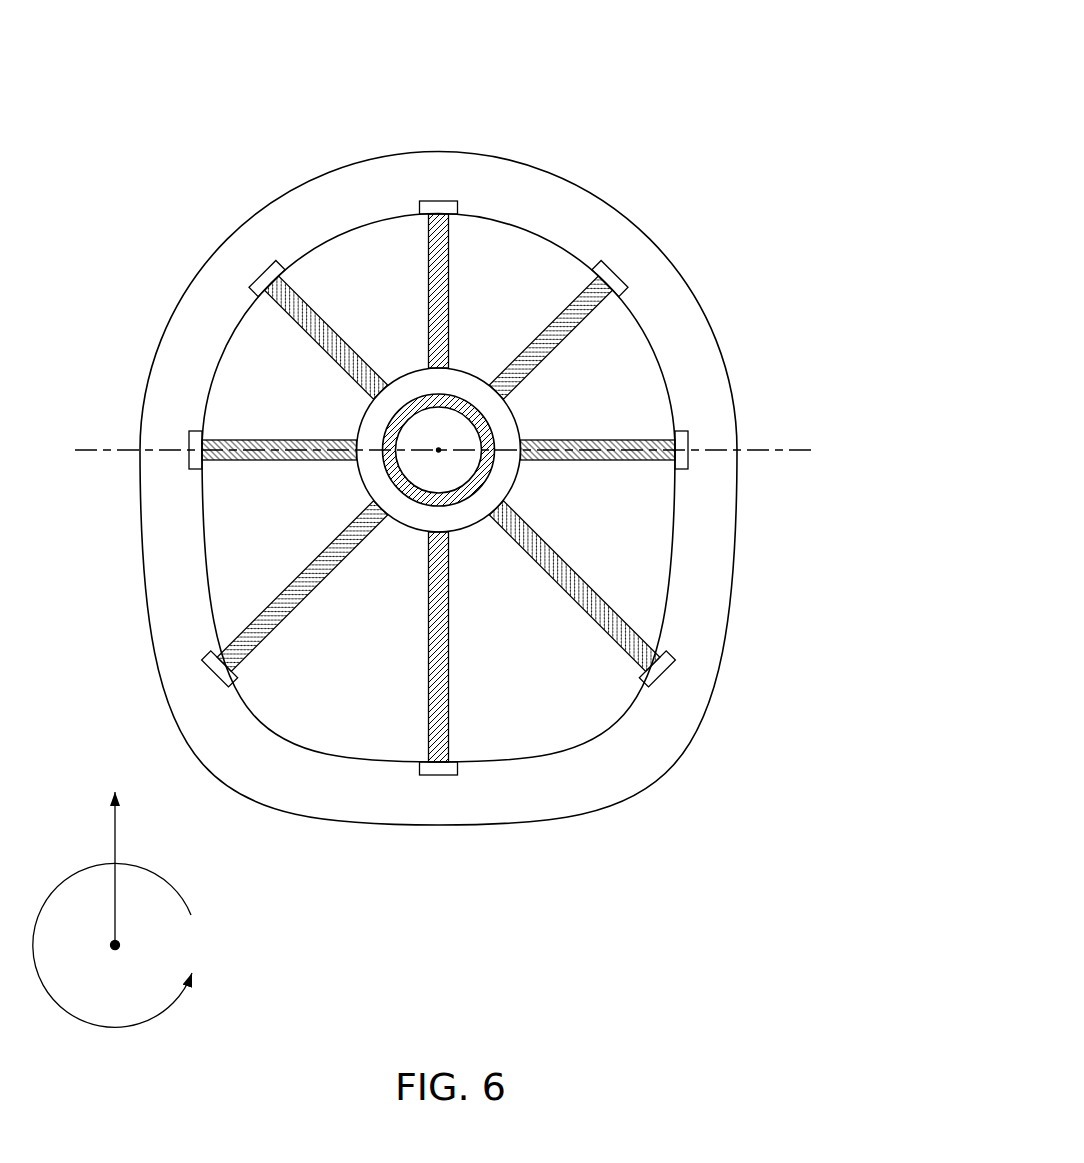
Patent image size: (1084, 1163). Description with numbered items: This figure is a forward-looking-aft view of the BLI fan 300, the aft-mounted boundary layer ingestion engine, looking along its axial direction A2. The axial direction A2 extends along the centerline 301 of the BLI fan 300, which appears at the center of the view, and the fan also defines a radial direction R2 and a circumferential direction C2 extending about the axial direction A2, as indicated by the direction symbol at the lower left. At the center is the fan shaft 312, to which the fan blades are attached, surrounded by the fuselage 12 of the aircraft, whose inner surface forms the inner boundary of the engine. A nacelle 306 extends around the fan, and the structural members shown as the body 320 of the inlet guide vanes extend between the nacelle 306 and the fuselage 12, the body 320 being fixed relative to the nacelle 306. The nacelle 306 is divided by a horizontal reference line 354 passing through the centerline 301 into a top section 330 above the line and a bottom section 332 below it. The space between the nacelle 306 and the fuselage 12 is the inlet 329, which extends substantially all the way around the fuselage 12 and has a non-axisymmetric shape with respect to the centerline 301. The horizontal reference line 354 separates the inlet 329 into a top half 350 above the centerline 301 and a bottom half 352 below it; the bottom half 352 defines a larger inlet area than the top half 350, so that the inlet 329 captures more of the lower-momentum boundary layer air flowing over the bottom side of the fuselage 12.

The BLI fan 300 is at (690, 57).
The nacelle 306 is at (342, 182).
The top section 330 is at (442, 128).
The body 320 is at (448, 277).
The fan shaft 312 is at (471, 402).
The centerline 301 is at (441, 449).
The fuselage 12 is at (362, 418).
The inlet 329 is at (637, 397).
The top half 350 is at (250, 372).
The bottom half 352 is at (240, 562).
The horizontal reference line 354 is at (82, 449).
The bottom section 332 is at (487, 862).
The radial direction R2 is at (119, 850).
The axial direction A2 is at (118, 945).
The circumferential direction C2 is at (153, 1020).